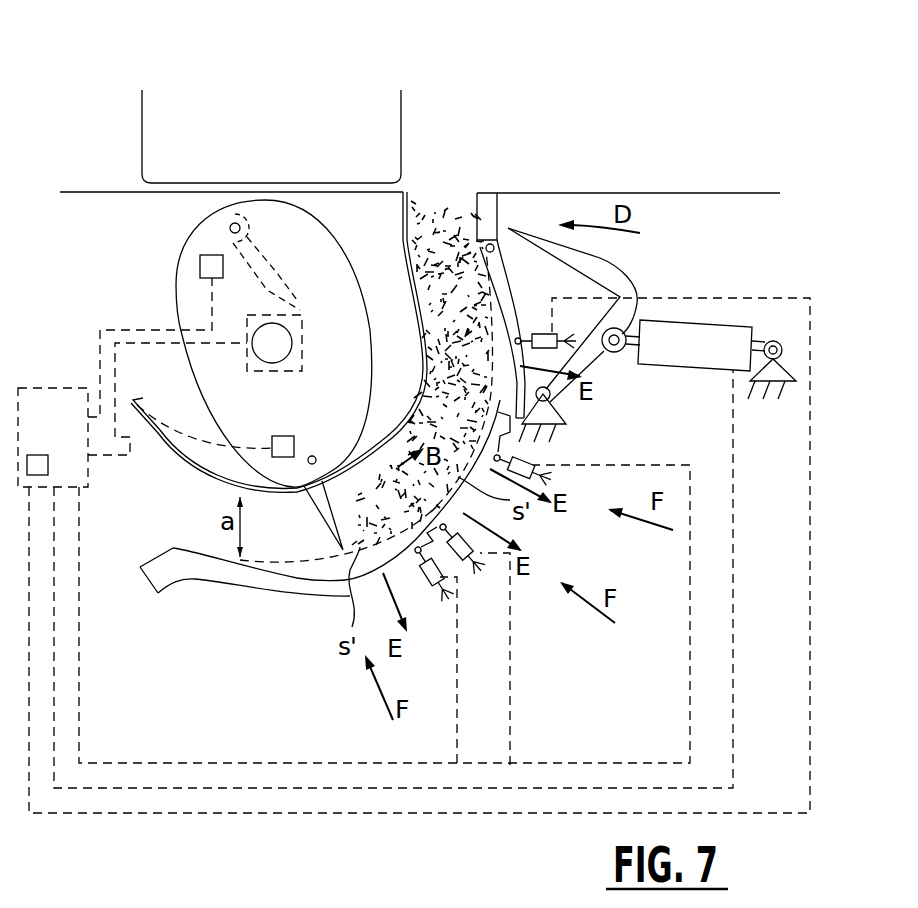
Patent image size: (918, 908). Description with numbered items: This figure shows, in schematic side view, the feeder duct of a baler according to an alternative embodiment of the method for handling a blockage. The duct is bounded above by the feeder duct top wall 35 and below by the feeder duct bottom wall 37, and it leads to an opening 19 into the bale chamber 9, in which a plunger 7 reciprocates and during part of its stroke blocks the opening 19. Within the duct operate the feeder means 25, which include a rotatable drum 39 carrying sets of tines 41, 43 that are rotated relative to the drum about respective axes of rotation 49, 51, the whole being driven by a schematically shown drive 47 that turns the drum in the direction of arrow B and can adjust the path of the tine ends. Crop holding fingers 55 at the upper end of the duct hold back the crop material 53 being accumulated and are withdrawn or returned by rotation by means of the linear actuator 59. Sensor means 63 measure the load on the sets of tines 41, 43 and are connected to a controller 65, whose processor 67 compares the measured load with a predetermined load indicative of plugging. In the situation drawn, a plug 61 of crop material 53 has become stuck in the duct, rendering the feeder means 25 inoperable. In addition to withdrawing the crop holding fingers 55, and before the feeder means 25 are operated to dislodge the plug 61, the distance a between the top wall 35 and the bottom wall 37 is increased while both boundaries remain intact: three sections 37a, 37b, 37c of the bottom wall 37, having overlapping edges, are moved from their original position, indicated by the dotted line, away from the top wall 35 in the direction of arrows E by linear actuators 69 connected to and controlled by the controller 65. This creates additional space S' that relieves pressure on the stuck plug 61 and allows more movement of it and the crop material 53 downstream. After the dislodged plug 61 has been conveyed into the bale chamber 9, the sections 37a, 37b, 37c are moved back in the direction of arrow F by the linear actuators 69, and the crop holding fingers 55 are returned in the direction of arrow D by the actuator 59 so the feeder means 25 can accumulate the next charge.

The plunger 7 is at (318, 112).
The bale chamber 9 is at (596, 122).
The opening 19 is at (450, 165).
The feeder means 25 is at (138, 298).
The feeder duct top wall 35 is at (404, 278).
The feeder duct bottom wall 37 is at (355, 446).
The first section of the bottom wall 37a is at (282, 587).
The second section of the bottom wall 37b is at (458, 507).
The third section of the bottom wall 37c is at (500, 268).
The rotatable drum 39 is at (217, 377).
The set of tines 41 is at (263, 262).
The set of tines 43 is at (318, 488).
The drive 47 is at (262, 376).
The axis of rotation 49 is at (230, 228).
The axis of rotation 51 is at (313, 456).
The crop material 53 is at (442, 407).
The crop holding fingers 55 is at (602, 266).
The linear actuator 59 is at (688, 352).
The plug of crop material 61 is at (367, 523).
The sensor means 63 is at (200, 264).
The controller 65 is at (60, 390).
The processor 67 is at (50, 462).
The linear actuators 69 is at (540, 348).